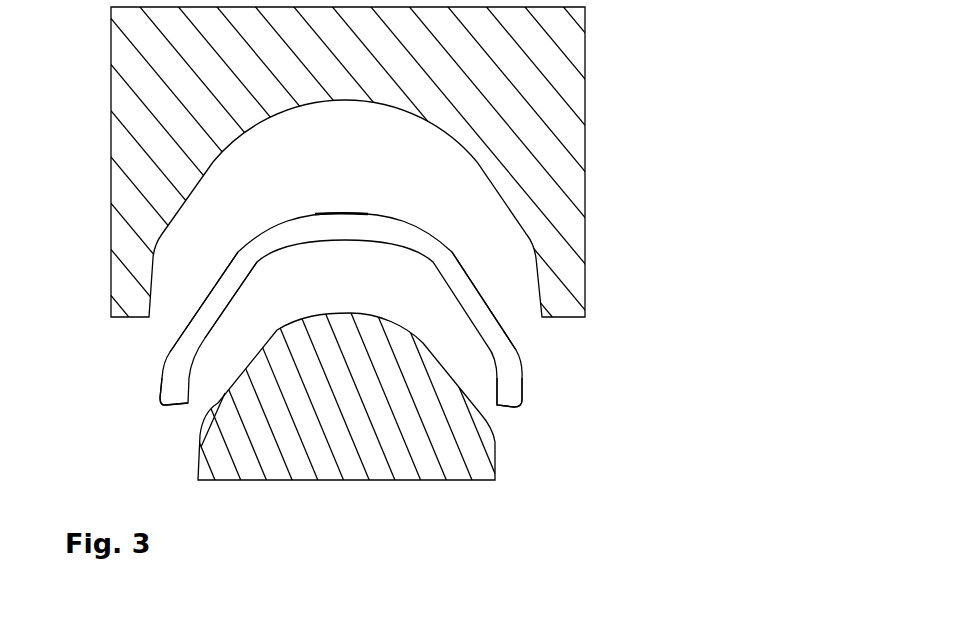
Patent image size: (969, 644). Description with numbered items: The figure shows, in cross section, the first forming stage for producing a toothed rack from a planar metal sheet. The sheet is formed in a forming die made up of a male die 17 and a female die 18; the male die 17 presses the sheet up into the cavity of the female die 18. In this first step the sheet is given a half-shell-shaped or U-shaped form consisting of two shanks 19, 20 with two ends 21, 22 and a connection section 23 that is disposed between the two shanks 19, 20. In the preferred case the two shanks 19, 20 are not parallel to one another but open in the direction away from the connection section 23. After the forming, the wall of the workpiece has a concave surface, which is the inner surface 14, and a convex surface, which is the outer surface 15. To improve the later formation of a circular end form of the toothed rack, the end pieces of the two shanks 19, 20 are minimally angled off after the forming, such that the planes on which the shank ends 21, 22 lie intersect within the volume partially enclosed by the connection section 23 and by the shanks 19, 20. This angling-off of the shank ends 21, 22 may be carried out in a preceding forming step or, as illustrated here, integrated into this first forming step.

The inner surface 14 is at (217, 320).
The outer surface 15 is at (470, 274).
The male die 17 is at (418, 457).
The female die 18 is at (548, 102).
The shank 19 is at (485, 323).
The shank 20 is at (227, 277).
The shank end 21 is at (523, 410).
The shank end 22 is at (167, 407).
The connection section 23 is at (342, 225).